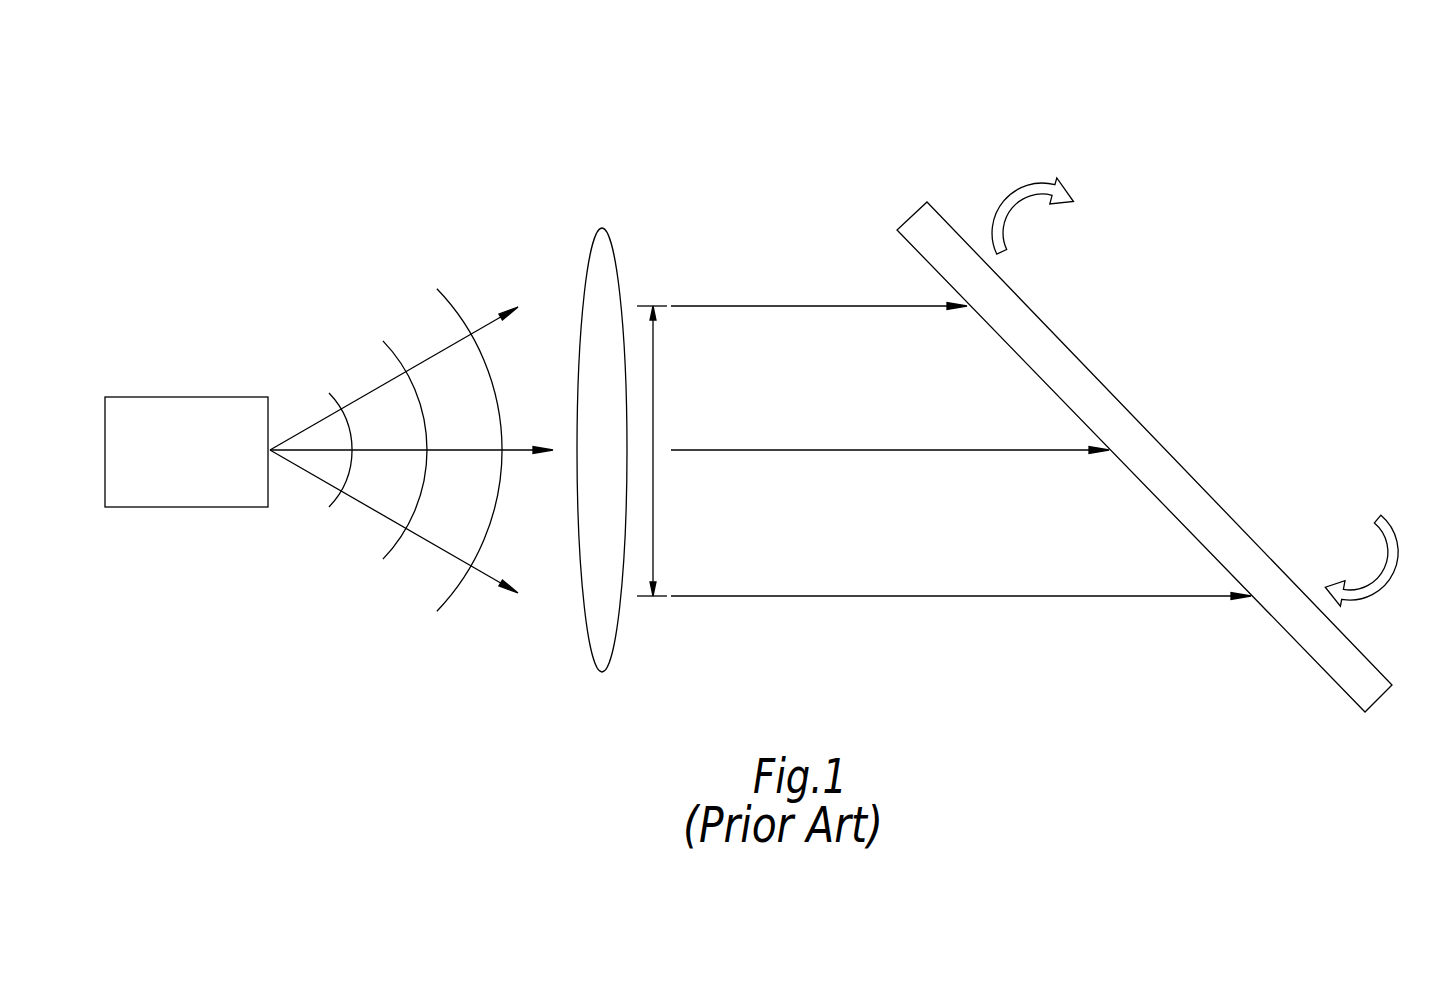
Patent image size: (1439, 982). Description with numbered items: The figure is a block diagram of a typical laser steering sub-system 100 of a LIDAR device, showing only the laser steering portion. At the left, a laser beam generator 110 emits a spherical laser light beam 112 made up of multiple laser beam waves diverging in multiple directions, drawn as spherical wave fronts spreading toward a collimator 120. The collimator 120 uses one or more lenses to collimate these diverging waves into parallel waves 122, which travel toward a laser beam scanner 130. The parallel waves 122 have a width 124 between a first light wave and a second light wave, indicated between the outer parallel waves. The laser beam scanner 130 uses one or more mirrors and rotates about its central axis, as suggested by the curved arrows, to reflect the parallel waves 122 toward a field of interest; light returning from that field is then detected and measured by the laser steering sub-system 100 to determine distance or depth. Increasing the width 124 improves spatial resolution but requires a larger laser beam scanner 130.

The laser steering sub-system 100 is at (767, 390).
The laser beam generator 110 is at (192, 396).
The spherical laser light beam 112 is at (451, 299).
The collimator 120 is at (602, 228).
The parallel waves 122 is at (807, 305).
The width 124 is at (655, 378).
The laser beam scanner 130 is at (1160, 443).